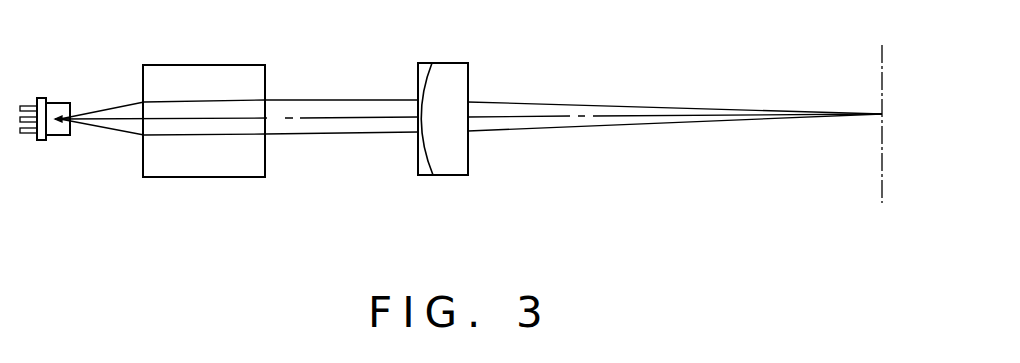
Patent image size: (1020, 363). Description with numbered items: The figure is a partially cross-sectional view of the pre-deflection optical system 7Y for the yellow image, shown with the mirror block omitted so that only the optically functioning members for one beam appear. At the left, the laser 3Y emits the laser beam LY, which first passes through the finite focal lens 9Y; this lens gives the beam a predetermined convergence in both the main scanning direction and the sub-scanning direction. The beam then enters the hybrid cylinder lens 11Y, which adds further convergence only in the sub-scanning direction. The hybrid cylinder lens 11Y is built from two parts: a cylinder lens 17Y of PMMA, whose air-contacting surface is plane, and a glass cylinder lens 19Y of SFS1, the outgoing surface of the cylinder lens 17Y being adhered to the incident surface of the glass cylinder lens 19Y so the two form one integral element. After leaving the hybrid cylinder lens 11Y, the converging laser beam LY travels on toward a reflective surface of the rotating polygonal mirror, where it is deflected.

The laser 3Y is at (45, 98).
The pre-deflection optical system 7Y is at (349, 139).
The finite focal lens 9Y is at (207, 72).
The hybrid cylinder lens 11Y is at (449, 116).
The cylinder lens 17Y is at (427, 65).
The glass cylinder lens 19Y is at (456, 68).
The laser beam LY is at (760, 112).